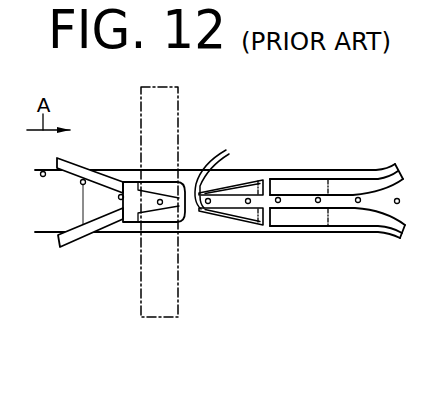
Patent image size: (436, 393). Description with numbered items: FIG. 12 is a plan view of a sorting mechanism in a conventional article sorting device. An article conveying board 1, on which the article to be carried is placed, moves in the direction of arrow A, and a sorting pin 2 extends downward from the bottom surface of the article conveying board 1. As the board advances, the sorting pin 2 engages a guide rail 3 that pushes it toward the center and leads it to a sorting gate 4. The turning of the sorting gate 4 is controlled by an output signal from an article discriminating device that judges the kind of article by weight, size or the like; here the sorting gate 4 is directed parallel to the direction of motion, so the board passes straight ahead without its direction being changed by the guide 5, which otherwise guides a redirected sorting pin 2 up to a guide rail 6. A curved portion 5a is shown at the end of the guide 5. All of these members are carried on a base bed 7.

The article conveying board 1 is at (173, 108).
The sorting pin 2 is at (358, 198).
The guide rail 3 is at (77, 173).
The sorting gate 4 is at (170, 187).
The guide 5 is at (248, 214).
The curved spring tongue 5a is at (224, 173).
The guide rail 6 is at (293, 217).
The base bed 7 is at (208, 234).